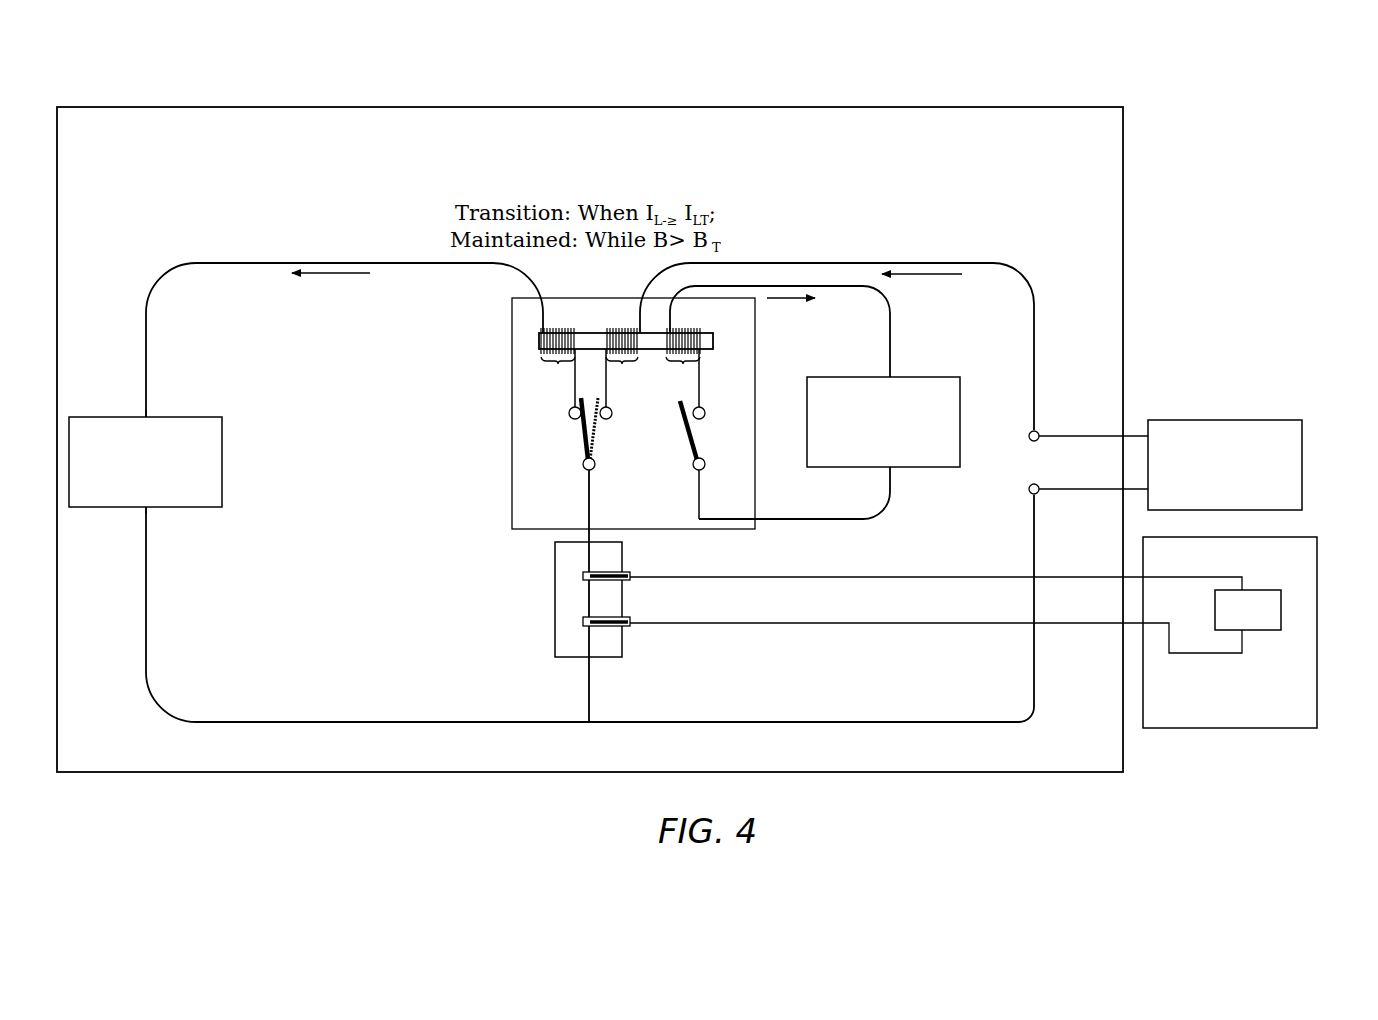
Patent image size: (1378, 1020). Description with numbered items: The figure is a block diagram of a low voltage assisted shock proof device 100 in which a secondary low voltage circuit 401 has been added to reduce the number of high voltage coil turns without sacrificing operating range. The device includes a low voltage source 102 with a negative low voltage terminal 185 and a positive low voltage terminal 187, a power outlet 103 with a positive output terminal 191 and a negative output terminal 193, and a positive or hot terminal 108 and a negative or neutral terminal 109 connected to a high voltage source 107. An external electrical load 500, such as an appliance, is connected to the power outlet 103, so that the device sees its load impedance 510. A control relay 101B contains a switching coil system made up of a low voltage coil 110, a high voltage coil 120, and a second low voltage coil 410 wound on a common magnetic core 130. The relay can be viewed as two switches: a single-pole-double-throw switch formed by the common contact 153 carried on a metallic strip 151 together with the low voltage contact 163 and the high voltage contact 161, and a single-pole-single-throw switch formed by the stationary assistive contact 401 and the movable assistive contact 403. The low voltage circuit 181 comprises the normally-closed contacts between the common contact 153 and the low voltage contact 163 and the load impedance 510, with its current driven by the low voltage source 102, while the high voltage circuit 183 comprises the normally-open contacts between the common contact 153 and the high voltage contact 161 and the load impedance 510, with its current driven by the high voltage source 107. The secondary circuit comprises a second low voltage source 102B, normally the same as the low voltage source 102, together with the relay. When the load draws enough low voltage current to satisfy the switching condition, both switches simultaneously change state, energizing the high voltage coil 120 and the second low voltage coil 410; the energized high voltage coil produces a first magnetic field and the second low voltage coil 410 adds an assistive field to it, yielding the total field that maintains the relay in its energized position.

The shock proof device 100 is at (700, 107).
The low voltage circuit 181 is at (246, 263).
The high voltage circuit 183 is at (848, 263).
The secondary low voltage circuit 401 is at (722, 445).
The control relay 101B is at (512, 371).
The magnetic core 130 is at (539, 341).
The low voltage coil 110 is at (555, 362).
The high voltage coil 120 is at (621, 362).
The second low voltage coil 410 is at (684, 346).
The low voltage contact 163 is at (572, 416).
The high voltage contact 161 is at (612, 416).
The metallic strip 151 is at (583, 455).
The common contact 153 is at (595, 470).
The movable assistive contact 403 is at (704, 470).
The low voltage source 102 is at (86, 417).
The negative low voltage terminal 185 is at (146, 417).
The positive low voltage terminal 187 is at (146, 507).
The second low voltage source 102B is at (853, 377).
The positive high voltage terminal 108 is at (1039, 432).
The negative high voltage terminal 109 is at (1039, 494).
The high voltage source 107 is at (1228, 420).
The external electrical load 500 is at (1310, 537).
The load impedance 510 is at (1262, 630).
The power outlet 103 is at (555, 565).
The positive output terminal 191 is at (583, 576).
The negative output terminal 193 is at (583, 622).